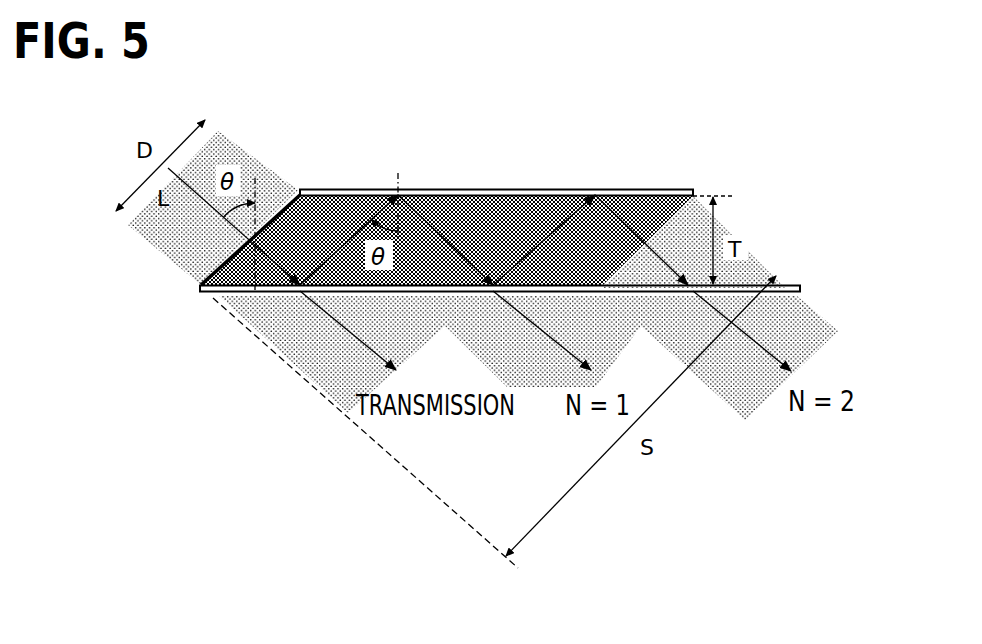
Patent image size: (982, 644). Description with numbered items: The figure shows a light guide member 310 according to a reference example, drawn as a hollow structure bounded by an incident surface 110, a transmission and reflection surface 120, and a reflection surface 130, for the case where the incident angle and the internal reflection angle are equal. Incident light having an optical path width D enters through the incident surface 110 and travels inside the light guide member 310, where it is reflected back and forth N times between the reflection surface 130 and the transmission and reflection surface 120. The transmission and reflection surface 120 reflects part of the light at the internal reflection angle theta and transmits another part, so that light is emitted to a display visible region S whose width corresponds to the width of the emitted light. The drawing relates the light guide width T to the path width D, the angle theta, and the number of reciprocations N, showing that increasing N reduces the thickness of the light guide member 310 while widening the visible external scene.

The incident surface 110 is at (197, 262).
The transmission and reflection surface 120 is at (232, 283).
The reflection surface 130 is at (535, 183).
The light guide member 310 is at (427, 232).